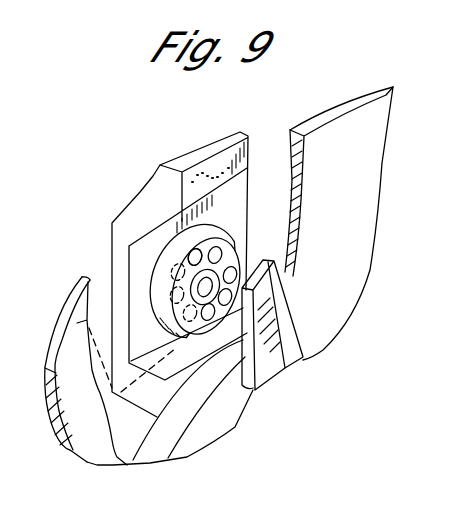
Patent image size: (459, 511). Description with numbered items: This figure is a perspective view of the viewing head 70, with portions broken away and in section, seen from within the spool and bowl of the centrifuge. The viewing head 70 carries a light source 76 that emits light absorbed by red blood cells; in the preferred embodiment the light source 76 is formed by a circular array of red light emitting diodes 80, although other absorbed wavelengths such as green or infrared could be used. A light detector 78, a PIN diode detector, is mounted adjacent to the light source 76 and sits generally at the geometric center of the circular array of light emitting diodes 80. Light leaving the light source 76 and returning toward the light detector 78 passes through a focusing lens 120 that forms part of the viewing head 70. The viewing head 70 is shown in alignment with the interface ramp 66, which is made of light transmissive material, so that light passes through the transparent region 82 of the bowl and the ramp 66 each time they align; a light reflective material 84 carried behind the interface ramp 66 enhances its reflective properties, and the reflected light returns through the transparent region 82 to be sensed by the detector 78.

The viewing head 70 is at (218, 148).
The focusing lens 120 is at (175, 289).
The light detector 78 is at (200, 293).
The light emitting diodes 80 is at (176, 253).
The light source 76 is at (212, 228).
The interface ramp 66 is at (260, 373).
The light reflective material 84 is at (304, 358).
The transparent region 82 is at (104, 315).